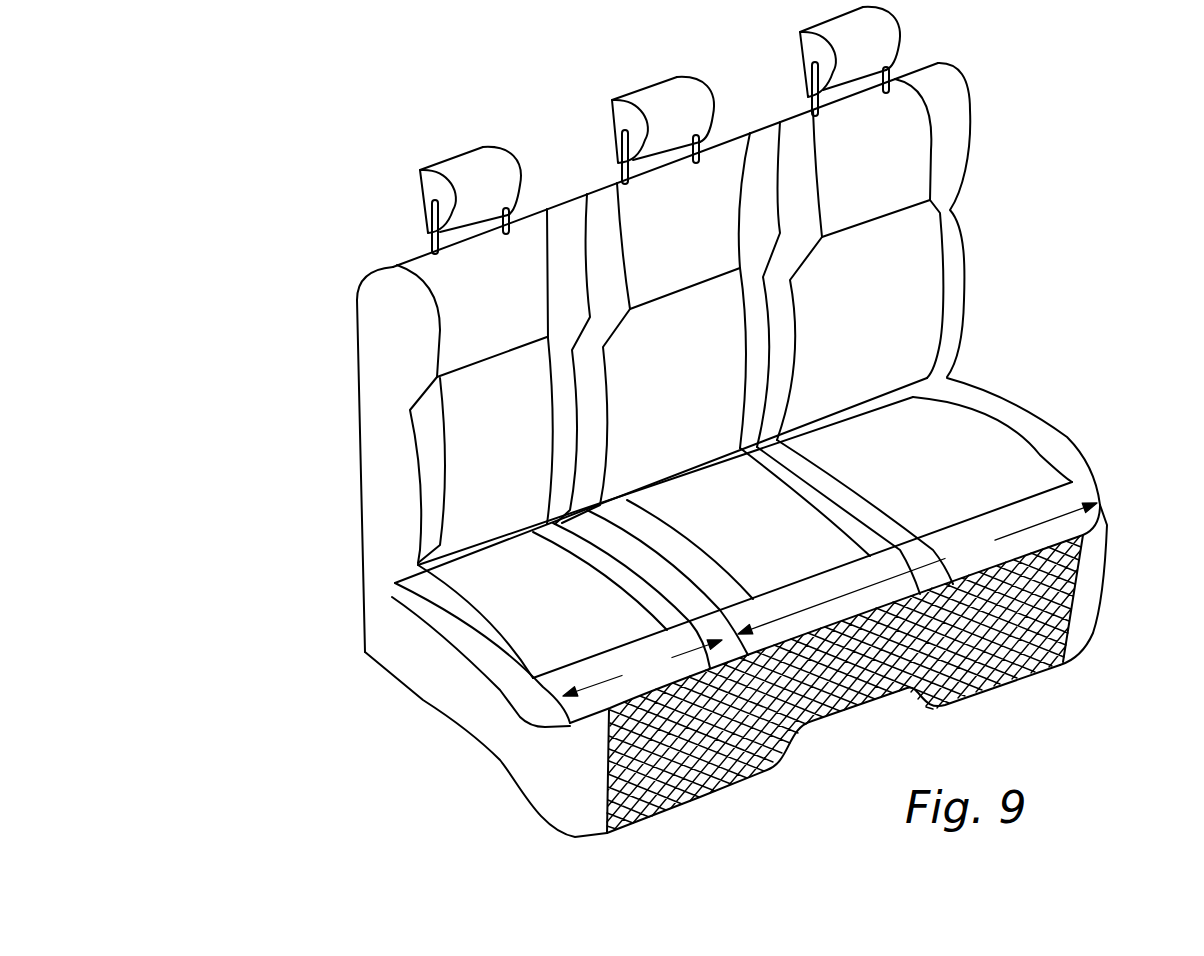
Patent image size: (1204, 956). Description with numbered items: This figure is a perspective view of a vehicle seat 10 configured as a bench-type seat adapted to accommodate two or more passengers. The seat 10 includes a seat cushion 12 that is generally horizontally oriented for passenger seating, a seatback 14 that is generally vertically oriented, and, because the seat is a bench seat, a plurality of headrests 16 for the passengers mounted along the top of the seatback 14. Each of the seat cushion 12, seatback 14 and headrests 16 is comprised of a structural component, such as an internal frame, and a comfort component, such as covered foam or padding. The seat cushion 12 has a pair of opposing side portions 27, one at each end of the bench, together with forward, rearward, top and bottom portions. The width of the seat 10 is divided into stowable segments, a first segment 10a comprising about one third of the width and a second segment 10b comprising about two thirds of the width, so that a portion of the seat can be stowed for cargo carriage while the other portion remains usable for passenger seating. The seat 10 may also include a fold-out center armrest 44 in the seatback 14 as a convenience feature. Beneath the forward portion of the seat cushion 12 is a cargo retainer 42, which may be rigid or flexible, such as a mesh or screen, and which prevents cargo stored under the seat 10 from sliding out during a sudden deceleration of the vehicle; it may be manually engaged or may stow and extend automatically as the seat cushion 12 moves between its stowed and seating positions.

The vehicle seat 10 is at (283, 188).
The first stowable segment 10a is at (642, 668).
The second stowable segment 10b is at (917, 568).
The seat cushion 12 is at (987, 447).
The seatback 14 is at (957, 150).
The headrest 16 is at (505, 162).
The side portion 27 is at (453, 687).
The cargo retainer 42 is at (1027, 693).
The fold-out center armrest 44 is at (705, 385).